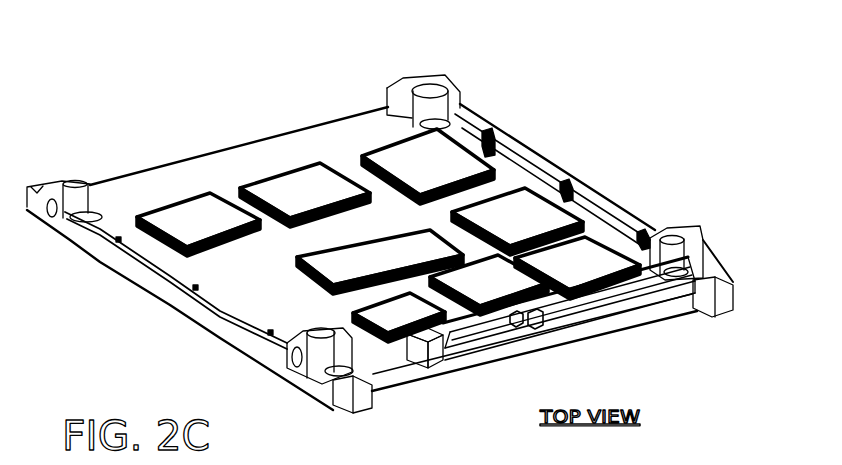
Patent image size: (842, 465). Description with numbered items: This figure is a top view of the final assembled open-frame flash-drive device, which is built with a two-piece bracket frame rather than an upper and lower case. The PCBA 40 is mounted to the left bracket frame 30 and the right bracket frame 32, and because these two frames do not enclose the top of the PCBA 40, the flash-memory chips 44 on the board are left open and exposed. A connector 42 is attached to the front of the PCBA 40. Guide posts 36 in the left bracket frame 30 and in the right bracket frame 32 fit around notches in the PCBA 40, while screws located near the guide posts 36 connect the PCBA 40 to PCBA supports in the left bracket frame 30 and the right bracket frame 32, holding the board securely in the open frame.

The left bracket frame 30 is at (143, 284).
The right bracket frame 32 is at (545, 158).
The guide posts 36 is at (92, 182).
The PCBA 40 is at (242, 199).
The connector 42 is at (603, 312).
The flash-memory chips 44 is at (388, 235).